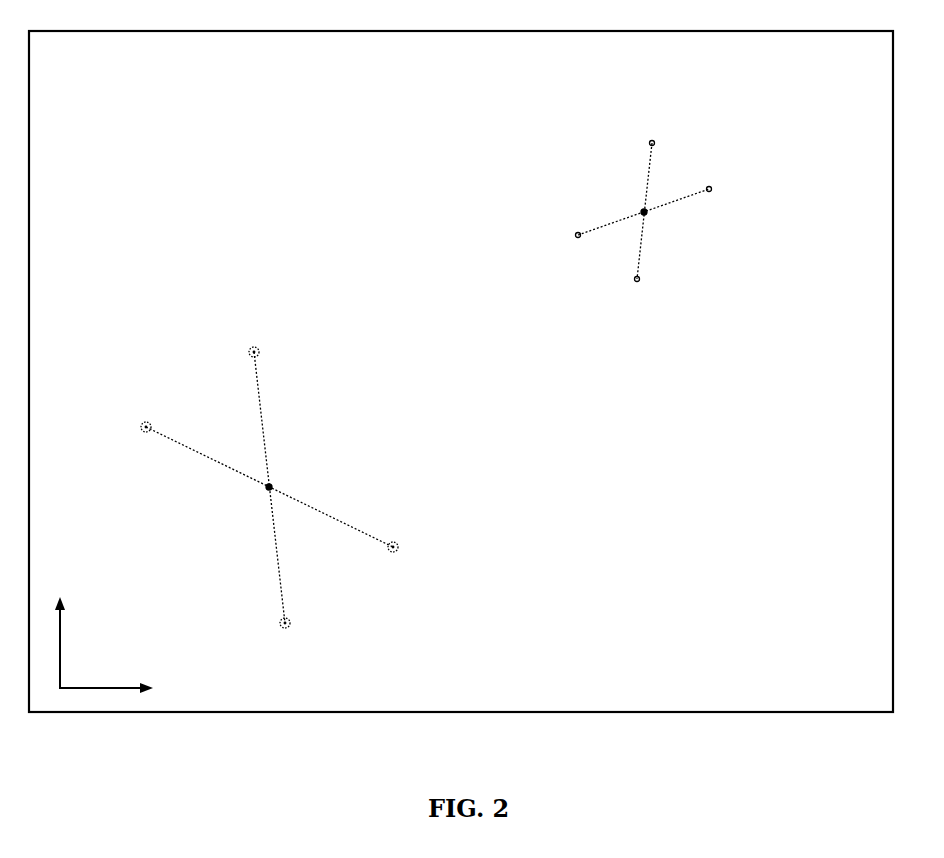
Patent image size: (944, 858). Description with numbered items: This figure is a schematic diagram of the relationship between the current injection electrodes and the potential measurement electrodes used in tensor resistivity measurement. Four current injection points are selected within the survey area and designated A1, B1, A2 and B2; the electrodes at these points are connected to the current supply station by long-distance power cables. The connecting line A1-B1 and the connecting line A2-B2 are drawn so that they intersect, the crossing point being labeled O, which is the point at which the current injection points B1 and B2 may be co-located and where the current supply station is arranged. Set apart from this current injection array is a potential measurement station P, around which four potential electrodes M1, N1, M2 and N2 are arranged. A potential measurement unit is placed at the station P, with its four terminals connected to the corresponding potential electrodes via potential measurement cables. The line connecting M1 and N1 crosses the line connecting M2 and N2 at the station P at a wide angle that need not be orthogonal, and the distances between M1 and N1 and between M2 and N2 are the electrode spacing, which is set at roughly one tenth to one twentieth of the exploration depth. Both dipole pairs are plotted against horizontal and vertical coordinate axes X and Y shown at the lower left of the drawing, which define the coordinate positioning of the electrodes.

The point O is at (269, 487).
The current injection point A1 is at (150, 410).
The current injection point A2 is at (304, 624).
The current injection point B1 is at (411, 549).
The current injection point B2 is at (271, 346).
The potential measurement station P is at (643, 211).
The potential electrode M1 is at (560, 241).
The potential electrode M2 is at (639, 294).
The potential electrode N1 is at (728, 189).
The potential electrode N2 is at (654, 131).
The X axis X is at (118, 688).
The Y axis Y is at (60, 627).